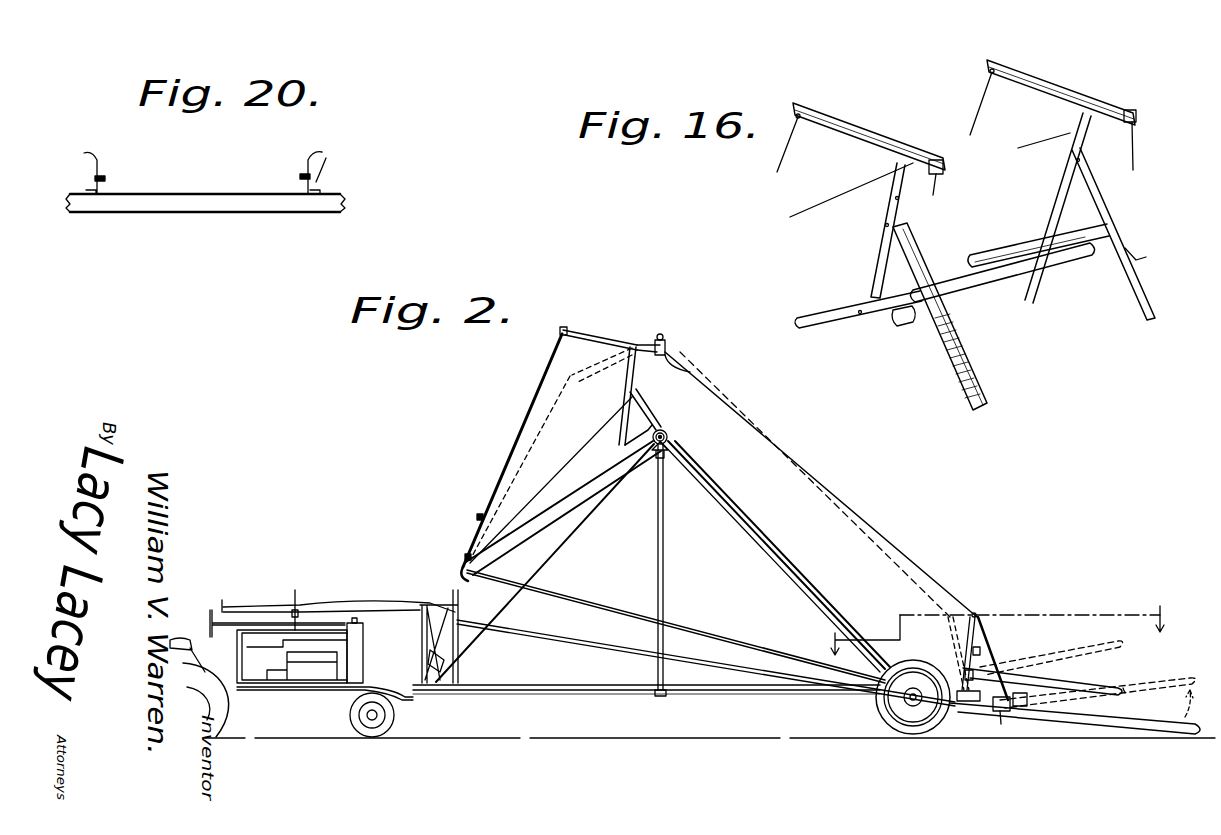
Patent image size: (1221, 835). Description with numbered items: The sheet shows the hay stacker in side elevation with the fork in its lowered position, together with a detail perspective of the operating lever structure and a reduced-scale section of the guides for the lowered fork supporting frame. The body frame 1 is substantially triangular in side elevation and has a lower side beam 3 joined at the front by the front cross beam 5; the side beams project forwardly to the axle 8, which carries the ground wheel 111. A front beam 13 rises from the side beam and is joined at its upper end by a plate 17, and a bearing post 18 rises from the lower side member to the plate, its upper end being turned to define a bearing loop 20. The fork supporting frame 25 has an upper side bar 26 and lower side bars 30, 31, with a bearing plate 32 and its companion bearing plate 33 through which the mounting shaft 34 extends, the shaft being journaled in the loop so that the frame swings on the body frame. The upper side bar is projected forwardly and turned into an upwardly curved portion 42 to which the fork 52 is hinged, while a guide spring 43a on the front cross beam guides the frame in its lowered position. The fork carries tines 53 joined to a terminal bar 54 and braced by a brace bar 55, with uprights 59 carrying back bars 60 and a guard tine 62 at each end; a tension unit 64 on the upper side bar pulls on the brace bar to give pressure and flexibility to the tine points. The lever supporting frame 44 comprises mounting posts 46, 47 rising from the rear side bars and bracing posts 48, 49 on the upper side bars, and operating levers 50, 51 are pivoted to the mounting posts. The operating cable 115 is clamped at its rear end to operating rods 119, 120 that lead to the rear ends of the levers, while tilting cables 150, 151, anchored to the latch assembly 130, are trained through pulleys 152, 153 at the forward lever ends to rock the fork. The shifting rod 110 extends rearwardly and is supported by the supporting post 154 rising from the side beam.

In FIG. 2, the body frame 1 is at (779, 698).
In FIG. 2, the lower side beam 3 is at (701, 692).
In FIG. 20, the front cross beam 5 is at (238, 207).
In FIG. 2, the axle 8 is at (993, 631).
In FIG. 2, the front beam 13 is at (800, 592).
In FIG. 2, the plate 17 is at (666, 460).
In FIG. 2, the bearing post 18 is at (665, 606).
In FIG. 2, the bearing loop 20 is at (668, 437).
In FIG. 2, the fork supporting frame 25 is at (589, 490).
In FIG. 2, the upper side bar 26 is at (827, 590).
In FIG. 20, the lower side bar 30 is at (101, 168).
In FIG. 20, the lower side bar 31 is at (300, 164).
In FIG. 16, the bearing plate 32 is at (912, 328).
In FIG. 2, the bearing plate 32 is at (667, 439).
In FIG. 16, the bearing plate 33 is at (1095, 262).
In FIG. 16, the mounting shaft 34 is at (1007, 290).
In FIG. 2, the mounting shaft 34 is at (662, 428).
In FIG. 2, the upwardly curved portion 42 is at (965, 712).
In FIG. 20, the guide spring 43a is at (322, 160).
In FIG. 16, the lever supporting frame 44 is at (1114, 218).
In FIG. 2, the lever supporting frame 44 is at (637, 336).
In FIG. 16, the mounting post 46 is at (871, 263).
In FIG. 2, the mounting post 46 is at (625, 423).
In FIG. 16, the mounting post 47 is at (1046, 211).
In FIG. 16, the bracing post 48 is at (916, 264).
In FIG. 2, the bracing post 48 is at (640, 405).
In FIG. 16, the bracing post 49 is at (1127, 249).
In FIG. 16, the operating lever 50 is at (866, 137).
In FIG. 2, the operating lever 50 is at (596, 328).
In FIG. 16, the operating lever 51 is at (1070, 93).
In FIG. 2, the fork 52 is at (1067, 667).
In FIG. 2, the tine 53 is at (1105, 720).
In FIG. 2, the terminal bar 54 is at (985, 715).
In FIG. 2, the brace bar 55 is at (1022, 710).
In FIG. 2, the upright 59 is at (985, 640).
In FIG. 2, the back bar 60 is at (980, 656).
In FIG. 2, the guard tine 62 is at (1102, 683).
In FIG. 2, the tension unit 64 is at (890, 657).
In FIG. 2, the shifting rod 110 is at (600, 642).
In FIG. 2, the ground wheel 111 is at (890, 720).
In FIG. 2, the operating cable 115 is at (467, 545).
In FIG. 16, the operating rod 119 is at (790, 153).
In FIG. 16, the operating rod 120 is at (985, 112).
In FIG. 2, the latch assembly 130 is at (411, 661).
In FIG. 16, the tilting cable 150 is at (840, 212).
In FIG. 2, the tilting cable 150 is at (806, 470).
In FIG. 16, the tilting cable 151 is at (1050, 150).
In FIG. 16, the pulley 152 is at (944, 173).
In FIG. 2, the pulley 152 is at (668, 350).
In FIG. 16, the pulley 153 is at (1137, 119).
In FIG. 2, the supporting post 154 is at (460, 672).